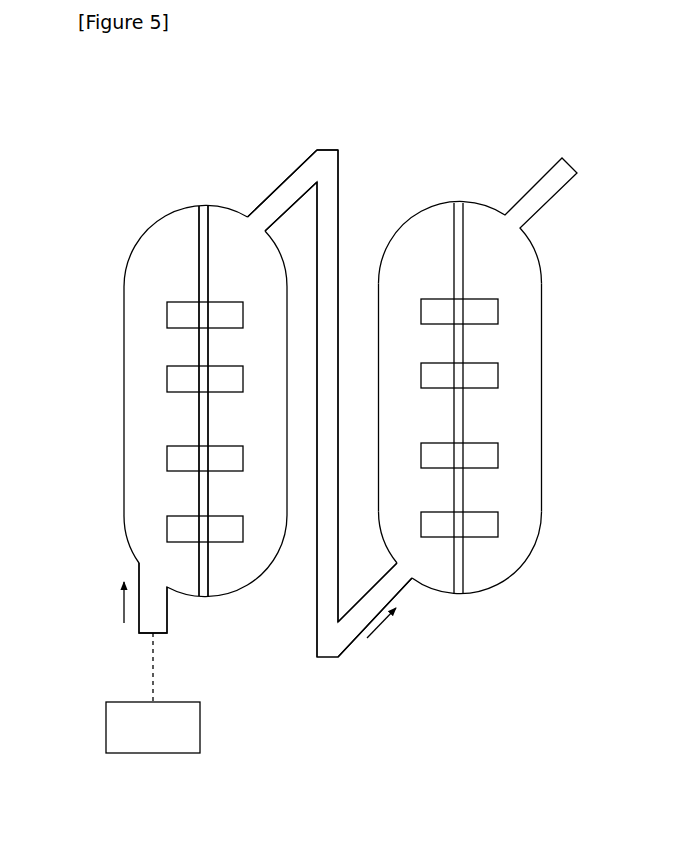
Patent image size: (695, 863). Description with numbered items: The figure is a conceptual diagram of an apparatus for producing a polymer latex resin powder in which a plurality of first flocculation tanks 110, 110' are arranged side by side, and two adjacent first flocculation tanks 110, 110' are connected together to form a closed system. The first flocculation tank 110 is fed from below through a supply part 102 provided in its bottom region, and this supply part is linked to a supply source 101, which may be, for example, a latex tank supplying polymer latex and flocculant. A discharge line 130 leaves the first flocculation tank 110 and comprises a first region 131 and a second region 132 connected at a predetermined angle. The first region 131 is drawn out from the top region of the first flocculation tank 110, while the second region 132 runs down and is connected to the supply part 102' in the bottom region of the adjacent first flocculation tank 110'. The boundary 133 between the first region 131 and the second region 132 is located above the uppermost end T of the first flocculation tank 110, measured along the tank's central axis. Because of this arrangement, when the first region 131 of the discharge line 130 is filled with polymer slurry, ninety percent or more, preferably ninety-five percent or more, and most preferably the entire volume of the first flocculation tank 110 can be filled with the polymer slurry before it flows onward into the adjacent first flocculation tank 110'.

The first flocculation tank 110 is at (197, 387).
The adjacent first flocculation tank 110' is at (477, 359).
The uppermost end T is at (203, 203).
The discharge line 130 is at (338, 112).
The first region 131 is at (288, 190).
The second region 132 is at (328, 192).
The boundary 133 is at (340, 140).
The supply part 102 is at (181, 609).
The supply part 102' is at (384, 621).
The supply source 101 is at (200, 727).